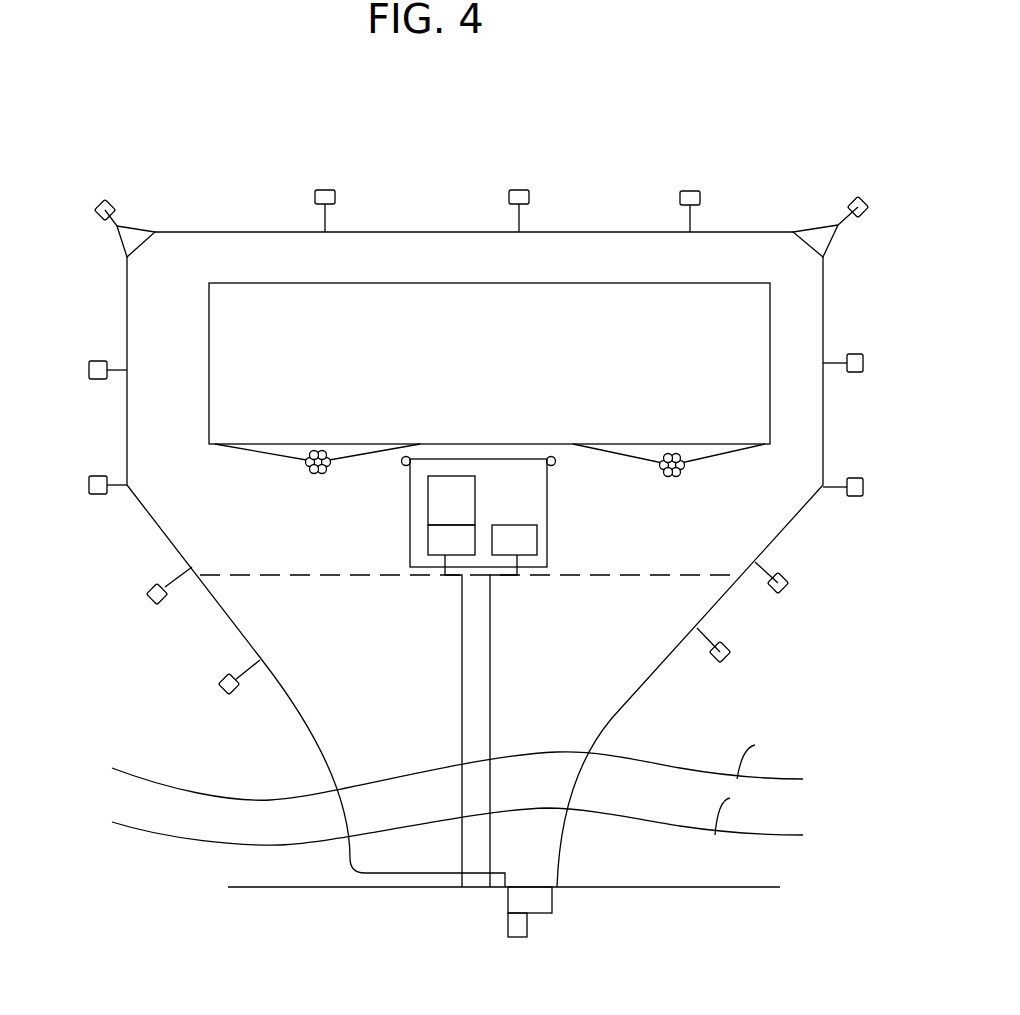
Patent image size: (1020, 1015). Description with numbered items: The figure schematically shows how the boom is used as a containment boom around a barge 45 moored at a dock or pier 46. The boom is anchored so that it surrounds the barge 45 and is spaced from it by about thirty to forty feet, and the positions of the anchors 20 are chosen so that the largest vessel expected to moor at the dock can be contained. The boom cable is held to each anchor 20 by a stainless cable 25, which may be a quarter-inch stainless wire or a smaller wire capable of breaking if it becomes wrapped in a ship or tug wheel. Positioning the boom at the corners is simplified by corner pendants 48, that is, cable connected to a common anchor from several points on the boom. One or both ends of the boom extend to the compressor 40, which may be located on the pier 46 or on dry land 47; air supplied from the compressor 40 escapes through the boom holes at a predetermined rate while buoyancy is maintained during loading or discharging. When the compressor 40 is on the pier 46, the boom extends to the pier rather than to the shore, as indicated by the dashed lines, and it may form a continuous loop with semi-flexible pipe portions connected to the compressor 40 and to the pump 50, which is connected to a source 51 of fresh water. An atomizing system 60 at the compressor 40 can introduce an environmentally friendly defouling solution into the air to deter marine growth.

The anchors 20 is at (322, 190).
The stainless cable 25 is at (688, 229).
The compressor 40 is at (518, 540).
The barge 45 is at (208, 353).
The pier 46 is at (549, 487).
The dry land 47 is at (742, 953).
The corner pendants 48 is at (841, 246).
The pump 50 is at (440, 546).
The source of fresh water 51 is at (440, 496).
The atomizing system 60 is at (520, 930).